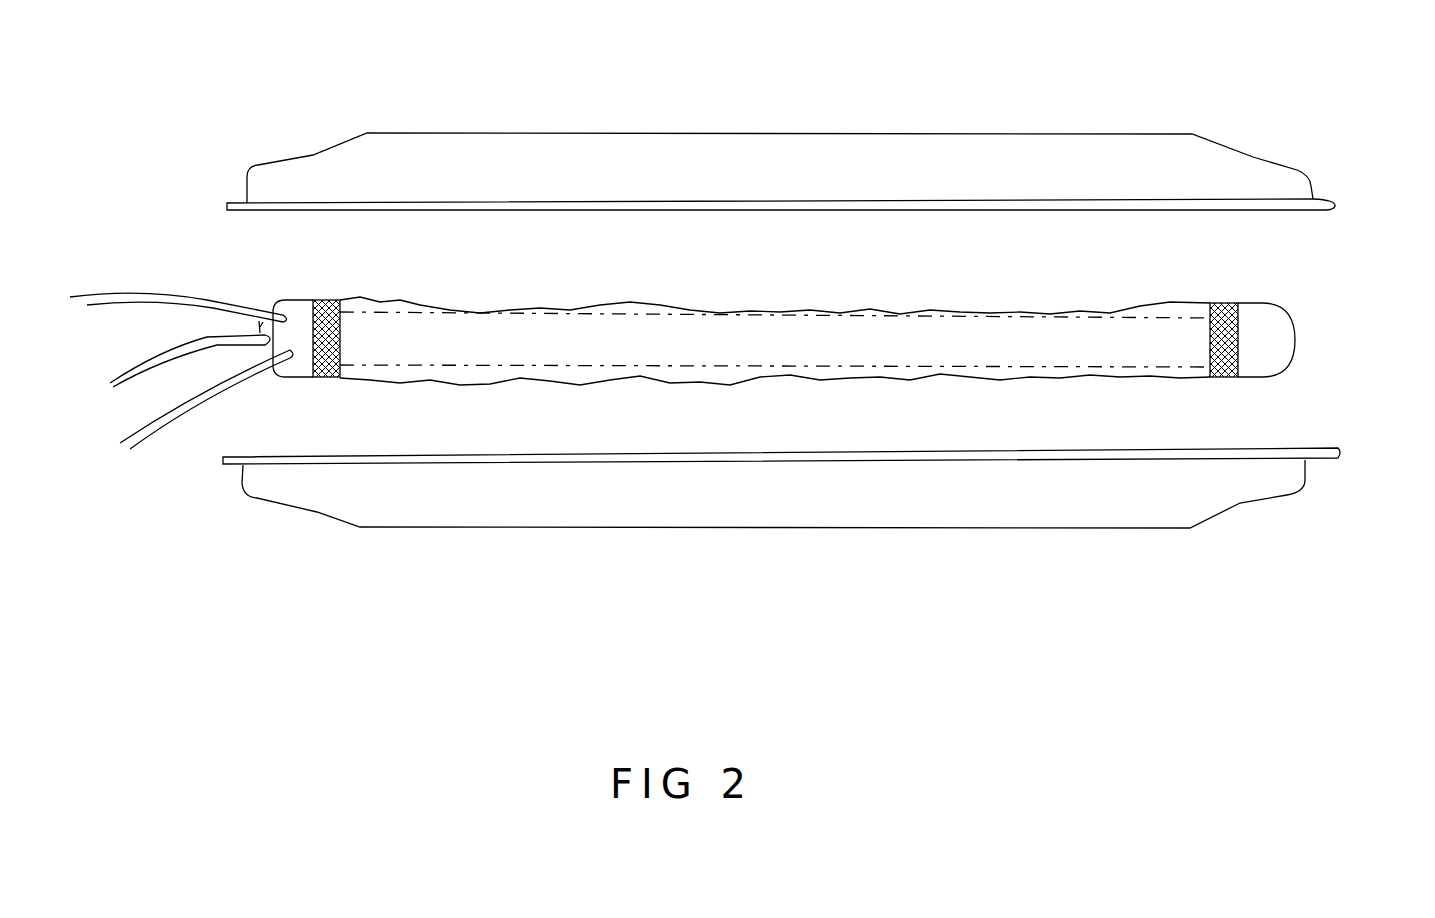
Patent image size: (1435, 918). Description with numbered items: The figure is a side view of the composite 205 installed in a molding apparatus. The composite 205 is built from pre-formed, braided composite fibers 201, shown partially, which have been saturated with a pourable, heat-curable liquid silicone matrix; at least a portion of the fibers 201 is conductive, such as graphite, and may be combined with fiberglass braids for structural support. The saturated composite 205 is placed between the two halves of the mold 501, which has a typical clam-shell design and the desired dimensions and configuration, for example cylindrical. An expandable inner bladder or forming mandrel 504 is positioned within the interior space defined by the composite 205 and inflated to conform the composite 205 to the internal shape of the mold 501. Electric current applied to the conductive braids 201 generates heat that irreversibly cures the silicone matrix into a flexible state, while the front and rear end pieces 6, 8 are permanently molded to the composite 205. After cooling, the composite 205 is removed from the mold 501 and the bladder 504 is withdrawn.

The mold 501 is at (380, 158).
The inner bladder 504 is at (366, 330).
The front end piece 6 is at (287, 307).
The composite 205 is at (1163, 303).
The rear end piece 8 is at (1263, 343).
The composite fibers 201 is at (1220, 380).